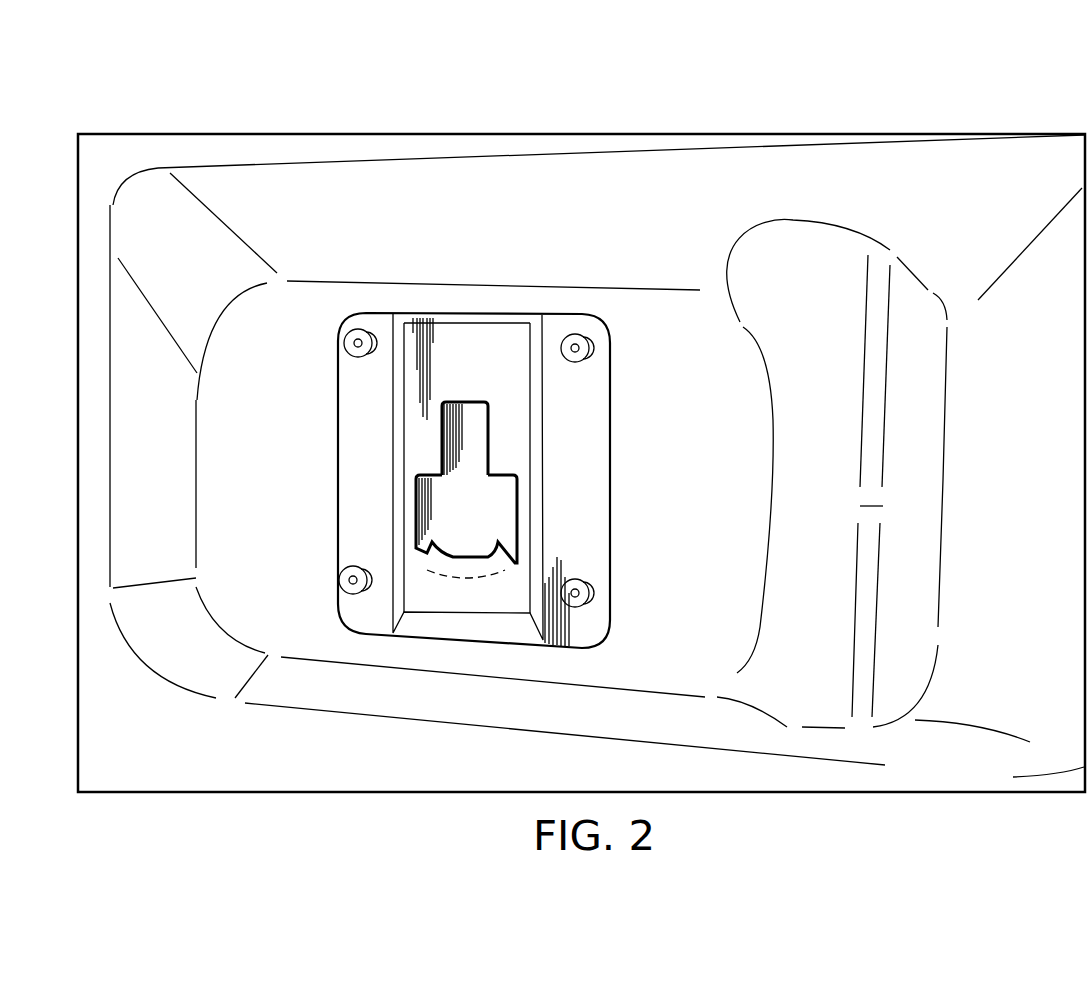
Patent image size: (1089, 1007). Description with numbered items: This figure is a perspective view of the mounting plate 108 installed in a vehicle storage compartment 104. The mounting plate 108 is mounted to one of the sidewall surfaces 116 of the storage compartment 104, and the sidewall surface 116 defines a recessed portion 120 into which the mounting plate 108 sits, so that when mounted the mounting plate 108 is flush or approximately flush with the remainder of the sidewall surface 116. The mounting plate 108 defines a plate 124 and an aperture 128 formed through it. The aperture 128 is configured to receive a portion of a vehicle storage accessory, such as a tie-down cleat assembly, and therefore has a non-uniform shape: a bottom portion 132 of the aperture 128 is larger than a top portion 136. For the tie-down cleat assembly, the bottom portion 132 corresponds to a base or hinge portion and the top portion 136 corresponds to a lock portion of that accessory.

The storage compartment 104 is at (148, 122).
The mounting plate 108 is at (500, 305).
The sidewall surface 116 is at (163, 213).
The recessed portion 120 is at (705, 327).
The plate 124 is at (588, 450).
The aperture 128 is at (495, 518).
The bottom portion 132 is at (463, 523).
The top portion 136 is at (472, 434).